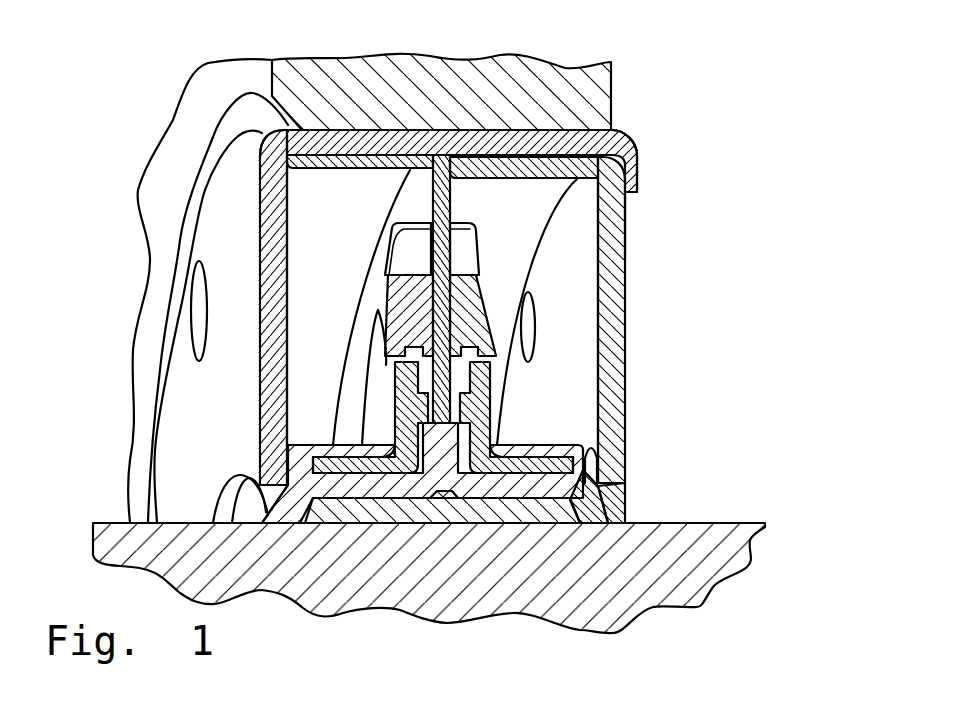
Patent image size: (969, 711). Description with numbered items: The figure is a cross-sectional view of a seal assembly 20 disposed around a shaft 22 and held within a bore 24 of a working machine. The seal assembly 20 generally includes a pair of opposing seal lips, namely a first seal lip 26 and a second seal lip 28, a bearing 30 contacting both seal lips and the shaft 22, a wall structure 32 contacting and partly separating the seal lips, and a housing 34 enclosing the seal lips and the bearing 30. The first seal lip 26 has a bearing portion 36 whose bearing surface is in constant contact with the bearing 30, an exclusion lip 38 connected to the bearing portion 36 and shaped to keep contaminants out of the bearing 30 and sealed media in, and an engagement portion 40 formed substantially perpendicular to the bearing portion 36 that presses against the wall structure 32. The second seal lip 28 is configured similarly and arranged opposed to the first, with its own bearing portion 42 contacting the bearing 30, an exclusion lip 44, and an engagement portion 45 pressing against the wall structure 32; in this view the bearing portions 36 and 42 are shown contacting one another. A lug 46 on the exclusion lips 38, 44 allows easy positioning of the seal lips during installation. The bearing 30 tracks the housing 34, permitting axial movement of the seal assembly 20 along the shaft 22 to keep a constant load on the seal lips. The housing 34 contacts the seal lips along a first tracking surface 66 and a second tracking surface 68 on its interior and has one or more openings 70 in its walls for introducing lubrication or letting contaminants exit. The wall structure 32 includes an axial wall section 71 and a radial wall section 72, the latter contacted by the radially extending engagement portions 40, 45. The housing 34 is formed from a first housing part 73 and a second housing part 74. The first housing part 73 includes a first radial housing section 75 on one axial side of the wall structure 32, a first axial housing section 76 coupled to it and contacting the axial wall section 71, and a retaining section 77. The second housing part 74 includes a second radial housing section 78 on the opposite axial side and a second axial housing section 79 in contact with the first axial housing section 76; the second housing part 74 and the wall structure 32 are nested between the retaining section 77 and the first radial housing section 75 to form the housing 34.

The seal assembly 20 is at (128, 198).
The shaft 22 is at (692, 572).
The bore 24 is at (228, 120).
The first seal lip 26 is at (383, 440).
The second seal lip 28 is at (503, 440).
The bearing 30 is at (386, 508).
The wall structure 32 is at (445, 428).
The housing 34 is at (533, 130).
The bearing portion 36 is at (290, 482).
The exclusion lip 38 is at (267, 508).
The engagement portion 40 is at (412, 315).
The bearing portion 42 is at (553, 487).
The exclusion lip 44 is at (600, 510).
The engagement portion 45 is at (473, 308).
The lug 46 is at (313, 447).
The first tracking surface 66 is at (288, 232).
The second tracking surface 68 is at (572, 342).
The opening 70 is at (197, 317).
The axial wall section 71 is at (355, 157).
The radial wall section 72 is at (450, 212).
The first housing part 73 is at (259, 126).
The second housing part 74 is at (640, 209).
The first radial housing section 75 is at (268, 258).
The first axial housing section 76 is at (403, 135).
The retaining section 77 is at (635, 163).
The second radial housing section 78 is at (628, 250).
The second axial housing section 79 is at (553, 163).